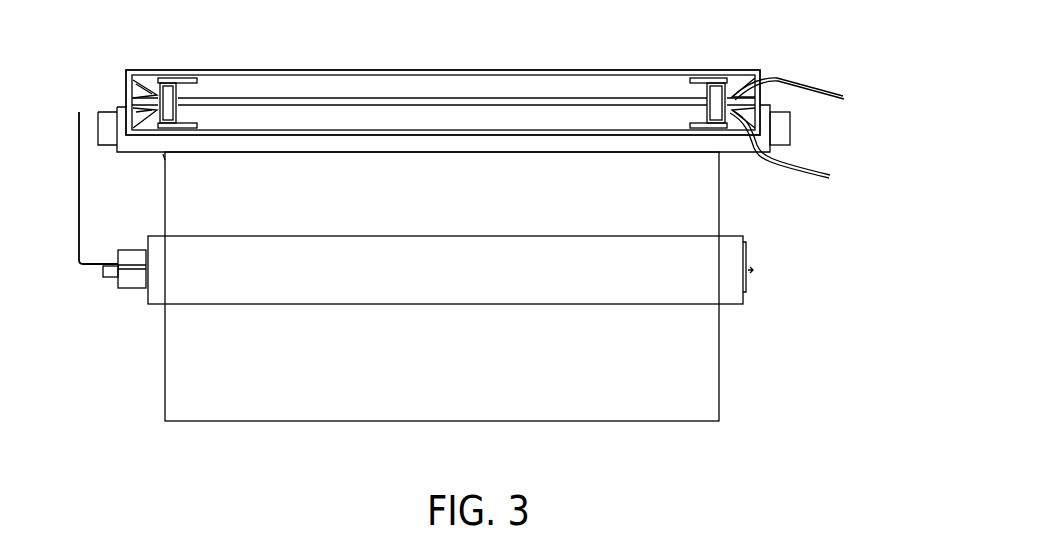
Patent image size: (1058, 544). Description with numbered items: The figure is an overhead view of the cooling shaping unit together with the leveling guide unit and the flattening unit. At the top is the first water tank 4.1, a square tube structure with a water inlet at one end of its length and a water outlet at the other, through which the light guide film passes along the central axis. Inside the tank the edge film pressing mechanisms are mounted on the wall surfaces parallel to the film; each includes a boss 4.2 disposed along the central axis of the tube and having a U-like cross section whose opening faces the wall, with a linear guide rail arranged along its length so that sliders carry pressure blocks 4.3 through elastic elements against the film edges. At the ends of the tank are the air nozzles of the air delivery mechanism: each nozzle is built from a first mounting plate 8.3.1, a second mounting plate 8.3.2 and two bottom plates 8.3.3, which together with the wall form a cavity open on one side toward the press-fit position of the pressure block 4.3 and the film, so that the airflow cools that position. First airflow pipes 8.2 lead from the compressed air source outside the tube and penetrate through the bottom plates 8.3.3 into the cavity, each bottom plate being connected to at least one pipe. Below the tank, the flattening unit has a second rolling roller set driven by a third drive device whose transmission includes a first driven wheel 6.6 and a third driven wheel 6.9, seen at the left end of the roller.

The first water tank 4.1 is at (249, 71).
The boss 4.2 is at (188, 80).
The pressure block 4.3 is at (163, 80).
The first mounting plate 8.3.1 is at (128, 98).
The second mounting plate 8.3.2 is at (140, 87).
The bottom plate 8.3.3 is at (153, 93).
The first airflow pipe 8.2 is at (784, 84).
The first driven wheel 6.6 is at (132, 273).
The third driven wheel 6.9 is at (117, 278).